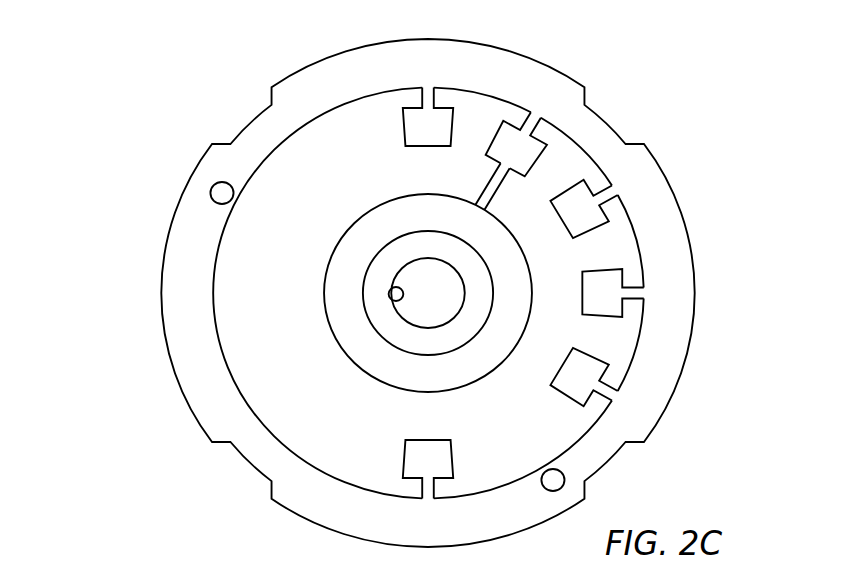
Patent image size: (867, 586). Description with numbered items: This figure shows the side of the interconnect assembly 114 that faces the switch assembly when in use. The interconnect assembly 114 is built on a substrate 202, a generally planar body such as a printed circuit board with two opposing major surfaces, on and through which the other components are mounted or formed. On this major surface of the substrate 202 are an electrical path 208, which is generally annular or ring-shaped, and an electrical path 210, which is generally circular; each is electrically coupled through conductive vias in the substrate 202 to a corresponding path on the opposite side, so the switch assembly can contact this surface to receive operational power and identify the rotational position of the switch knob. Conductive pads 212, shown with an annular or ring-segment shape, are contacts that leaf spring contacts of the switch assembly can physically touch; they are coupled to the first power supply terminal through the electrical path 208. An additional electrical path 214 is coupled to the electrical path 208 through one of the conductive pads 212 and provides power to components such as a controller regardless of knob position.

The interconnect assembly 114 is at (128, 137).
The substrate 202 is at (250, 372).
The electrical path 208 is at (650, 207).
The electrical path 210 is at (424, 284).
The conductive pads 212 is at (524, 146).
The additional electrical path 214 is at (446, 380).